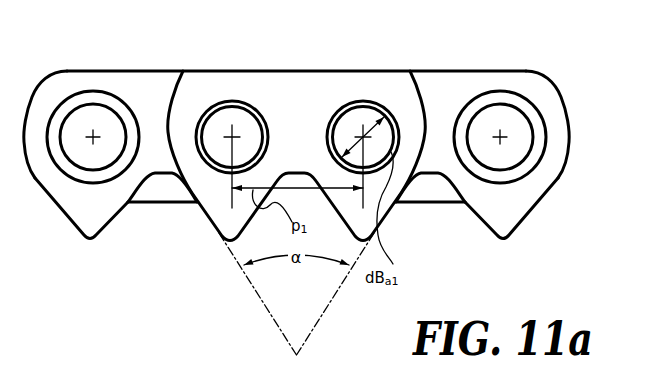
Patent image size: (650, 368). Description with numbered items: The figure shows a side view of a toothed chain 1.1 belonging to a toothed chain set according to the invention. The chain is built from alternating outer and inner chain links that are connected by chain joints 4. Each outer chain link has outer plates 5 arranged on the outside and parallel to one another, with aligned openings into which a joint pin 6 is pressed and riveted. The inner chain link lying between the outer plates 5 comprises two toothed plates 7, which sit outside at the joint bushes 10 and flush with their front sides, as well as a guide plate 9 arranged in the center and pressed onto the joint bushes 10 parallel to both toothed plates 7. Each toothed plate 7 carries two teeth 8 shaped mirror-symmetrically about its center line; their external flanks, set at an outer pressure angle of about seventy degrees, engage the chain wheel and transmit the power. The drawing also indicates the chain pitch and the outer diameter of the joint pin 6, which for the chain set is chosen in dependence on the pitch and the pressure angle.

The toothed chain 1.1 is at (569, 88).
The chain joint 4 is at (234, 94).
The outer plate 5 is at (297, 90).
The joint pin 6 is at (223, 115).
The toothed plate 7 is at (163, 92).
The tooth 8 is at (93, 217).
The guide plate 9 is at (157, 194).
The joint bush 10 is at (100, 103).